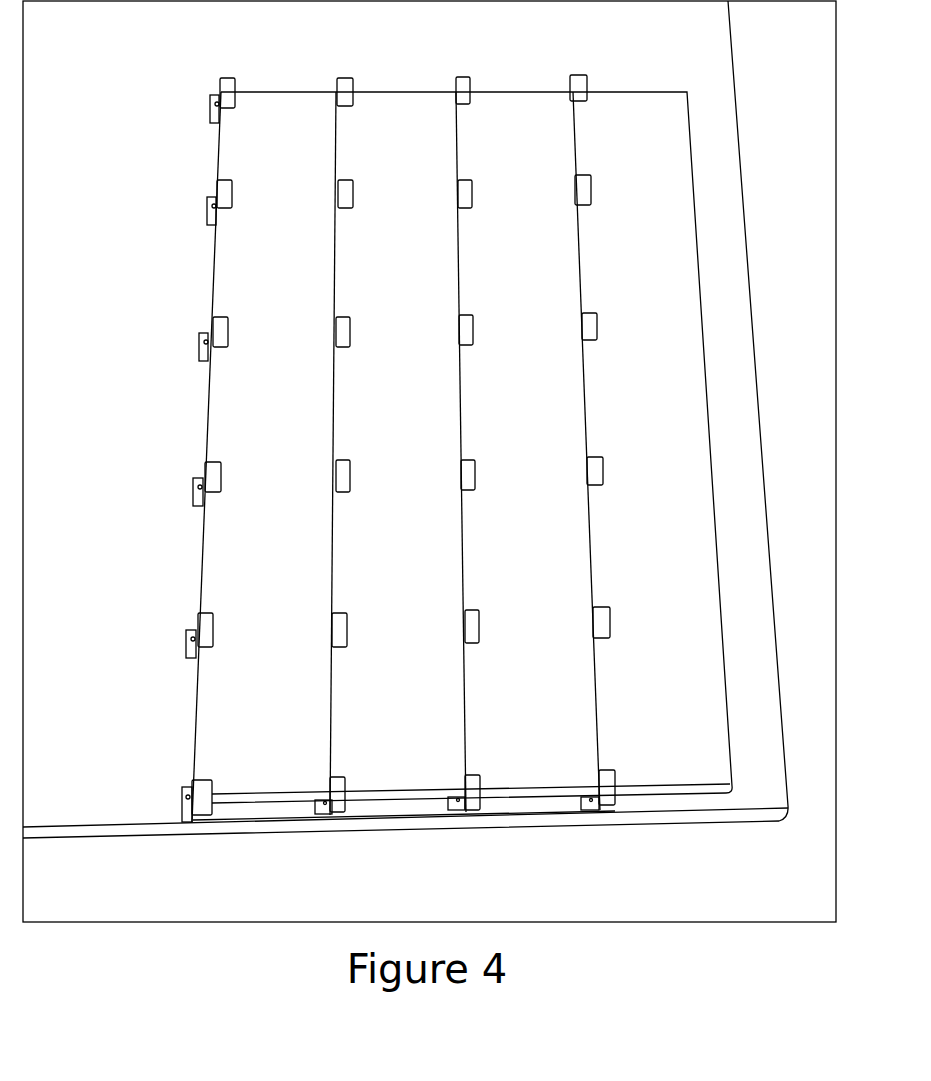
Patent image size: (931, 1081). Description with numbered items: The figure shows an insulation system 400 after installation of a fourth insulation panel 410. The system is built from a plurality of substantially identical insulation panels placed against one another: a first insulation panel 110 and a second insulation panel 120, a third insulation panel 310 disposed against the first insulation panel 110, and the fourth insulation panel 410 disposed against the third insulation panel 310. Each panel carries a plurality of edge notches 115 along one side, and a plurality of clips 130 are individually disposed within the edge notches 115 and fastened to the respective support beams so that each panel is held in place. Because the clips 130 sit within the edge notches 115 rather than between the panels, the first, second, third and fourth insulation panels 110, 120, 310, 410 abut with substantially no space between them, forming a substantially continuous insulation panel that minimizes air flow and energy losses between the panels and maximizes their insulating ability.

The insulation system 400 is at (132, 80).
The fourth insulation panel 410 is at (287, 84).
The third insulation panel 310 is at (405, 86).
The first insulation panel 110 is at (525, 86).
The second insulation panel 120 is at (637, 86).
The edge notches 115 is at (226, 76).
The clips 130 is at (240, 112).